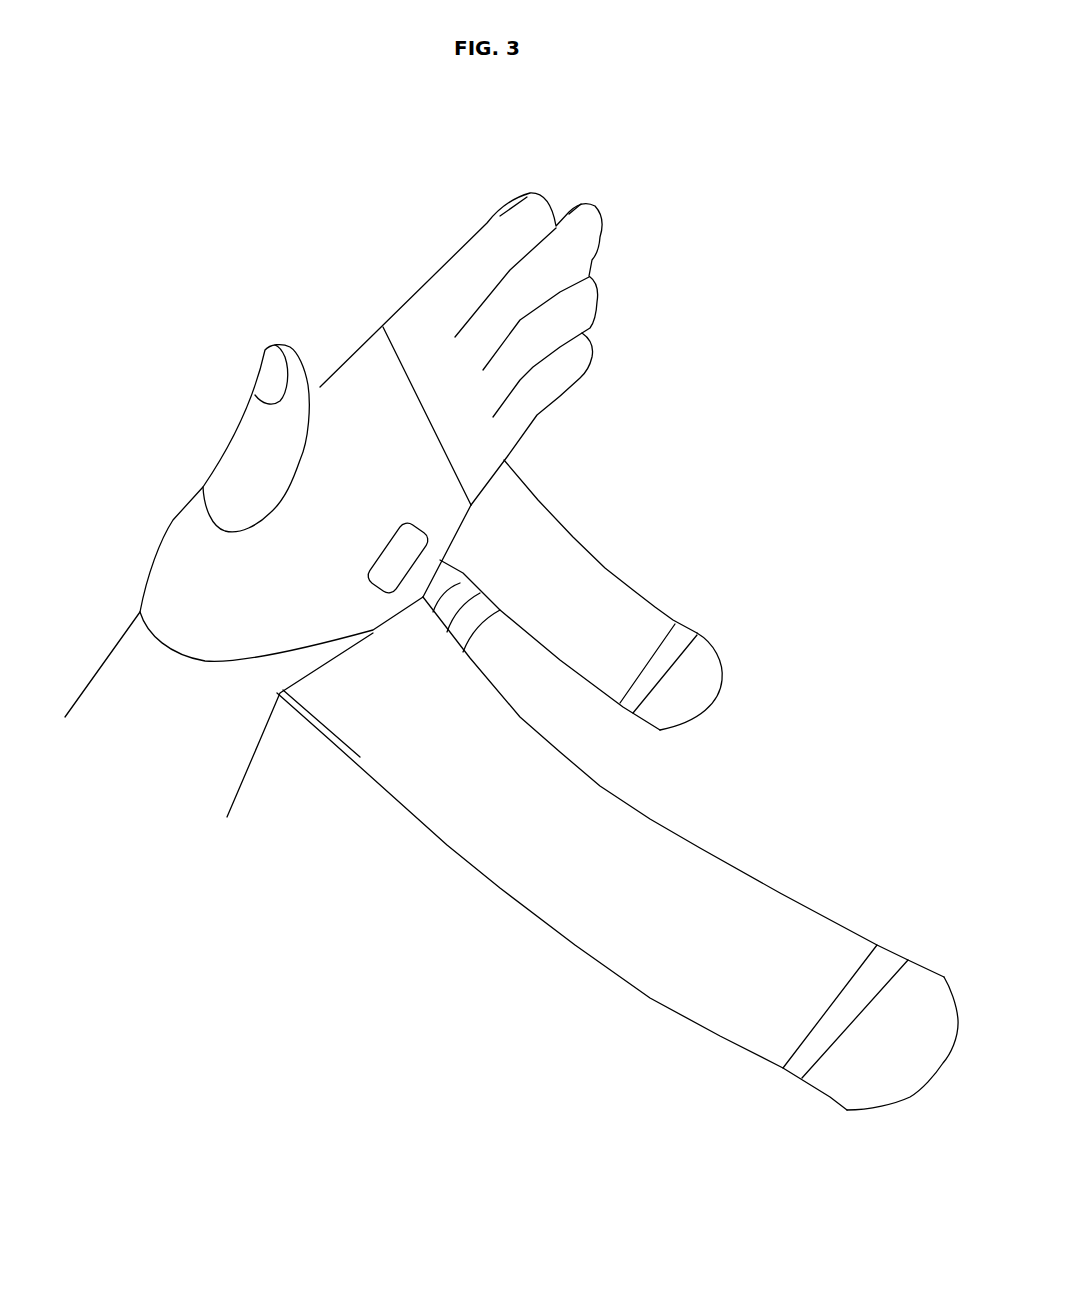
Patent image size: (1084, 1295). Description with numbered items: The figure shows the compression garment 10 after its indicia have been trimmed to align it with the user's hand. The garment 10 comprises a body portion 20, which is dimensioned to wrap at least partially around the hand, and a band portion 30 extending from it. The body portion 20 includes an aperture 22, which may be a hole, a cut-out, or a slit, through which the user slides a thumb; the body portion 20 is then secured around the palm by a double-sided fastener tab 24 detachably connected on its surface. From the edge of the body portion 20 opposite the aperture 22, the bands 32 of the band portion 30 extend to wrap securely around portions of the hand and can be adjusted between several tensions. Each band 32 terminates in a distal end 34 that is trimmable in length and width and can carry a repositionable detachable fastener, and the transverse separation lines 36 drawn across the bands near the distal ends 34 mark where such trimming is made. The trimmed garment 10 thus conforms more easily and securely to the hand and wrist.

The garment 10 is at (292, 214).
The body portion 20 is at (180, 547).
The aperture 22 is at (203, 487).
The fastener tab 24 is at (390, 547).
The band portion 30 is at (500, 510).
The band 32 is at (563, 570).
The distal end 34 is at (700, 657).
The separation line 36 is at (673, 620).